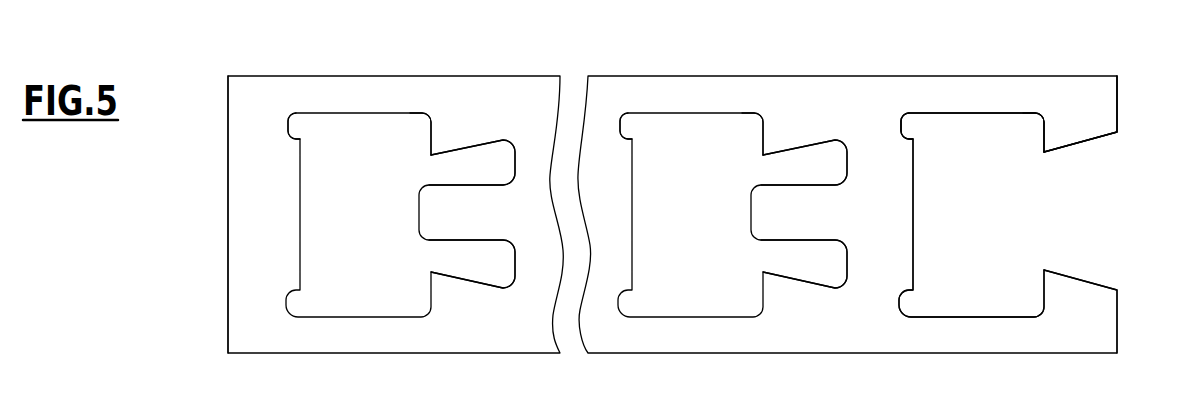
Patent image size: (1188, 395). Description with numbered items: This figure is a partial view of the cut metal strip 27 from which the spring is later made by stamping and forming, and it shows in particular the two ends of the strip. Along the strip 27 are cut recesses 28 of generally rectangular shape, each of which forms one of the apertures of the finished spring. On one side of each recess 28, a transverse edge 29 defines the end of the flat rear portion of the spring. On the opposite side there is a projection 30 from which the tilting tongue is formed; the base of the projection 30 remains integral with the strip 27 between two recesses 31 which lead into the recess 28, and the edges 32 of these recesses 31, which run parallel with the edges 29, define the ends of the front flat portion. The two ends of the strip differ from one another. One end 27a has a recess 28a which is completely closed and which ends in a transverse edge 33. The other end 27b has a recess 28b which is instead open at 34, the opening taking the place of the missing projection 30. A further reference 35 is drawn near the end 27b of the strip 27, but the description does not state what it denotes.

The metal strip 27 is at (605, 68).
The end of the strip 27a is at (240, 152).
The other end of the strip 27b is at (1105, 107).
The recess 28 is at (963, 148).
The closed recess 28a is at (365, 143).
The open recess 28b is at (697, 143).
The transverse edge 29 is at (301, 154).
The projection 30 is at (468, 224).
The recesses 31 is at (480, 160).
The edges 32 is at (429, 132).
The transverse edge 33 is at (228, 174).
The opening 34 is at (1077, 218).
The upper tab 35 is at (1070, 115).